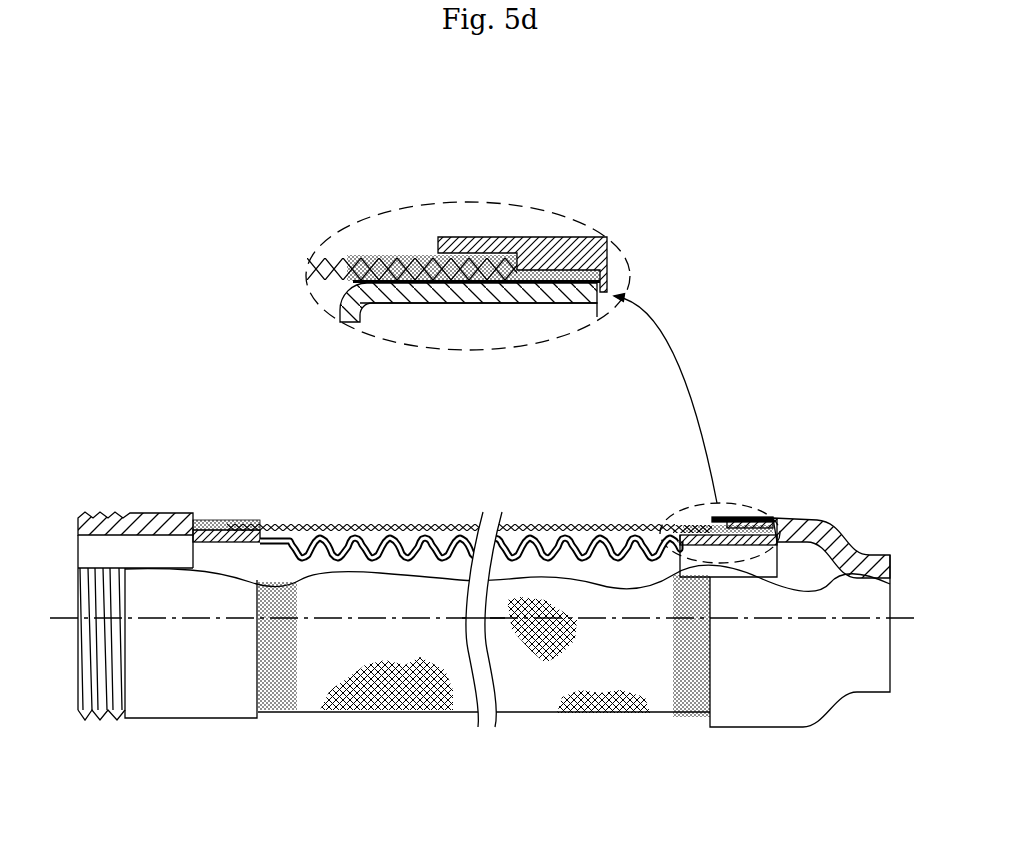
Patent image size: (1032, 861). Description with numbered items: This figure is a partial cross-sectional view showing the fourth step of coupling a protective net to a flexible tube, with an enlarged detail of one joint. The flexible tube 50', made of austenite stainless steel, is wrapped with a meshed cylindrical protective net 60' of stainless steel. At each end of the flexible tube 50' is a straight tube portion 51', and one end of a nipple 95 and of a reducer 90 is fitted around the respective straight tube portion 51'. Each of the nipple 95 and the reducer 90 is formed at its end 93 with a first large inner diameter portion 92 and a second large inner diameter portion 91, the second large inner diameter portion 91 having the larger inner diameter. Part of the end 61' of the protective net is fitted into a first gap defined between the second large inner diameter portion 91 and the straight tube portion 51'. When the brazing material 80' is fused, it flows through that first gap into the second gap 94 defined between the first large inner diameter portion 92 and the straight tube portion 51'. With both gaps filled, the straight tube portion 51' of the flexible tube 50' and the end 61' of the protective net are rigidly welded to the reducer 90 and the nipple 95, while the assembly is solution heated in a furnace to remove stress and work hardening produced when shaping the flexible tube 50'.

The flexible tube 50' is at (470, 505).
The straight tube portion 51' is at (615, 505).
The protective net 60' is at (468, 614).
The end of the protective net 61' is at (509, 350).
The brazing material 80' is at (563, 404).
The reducer 90 is at (837, 542).
The second large inner diameter portion 91 is at (235, 520).
The first large inner diameter portion 92 is at (200, 527).
The end of the reducer (nipple) 93 is at (208, 453).
The gap 94 is at (567, 282).
The nipple 95 is at (143, 517).